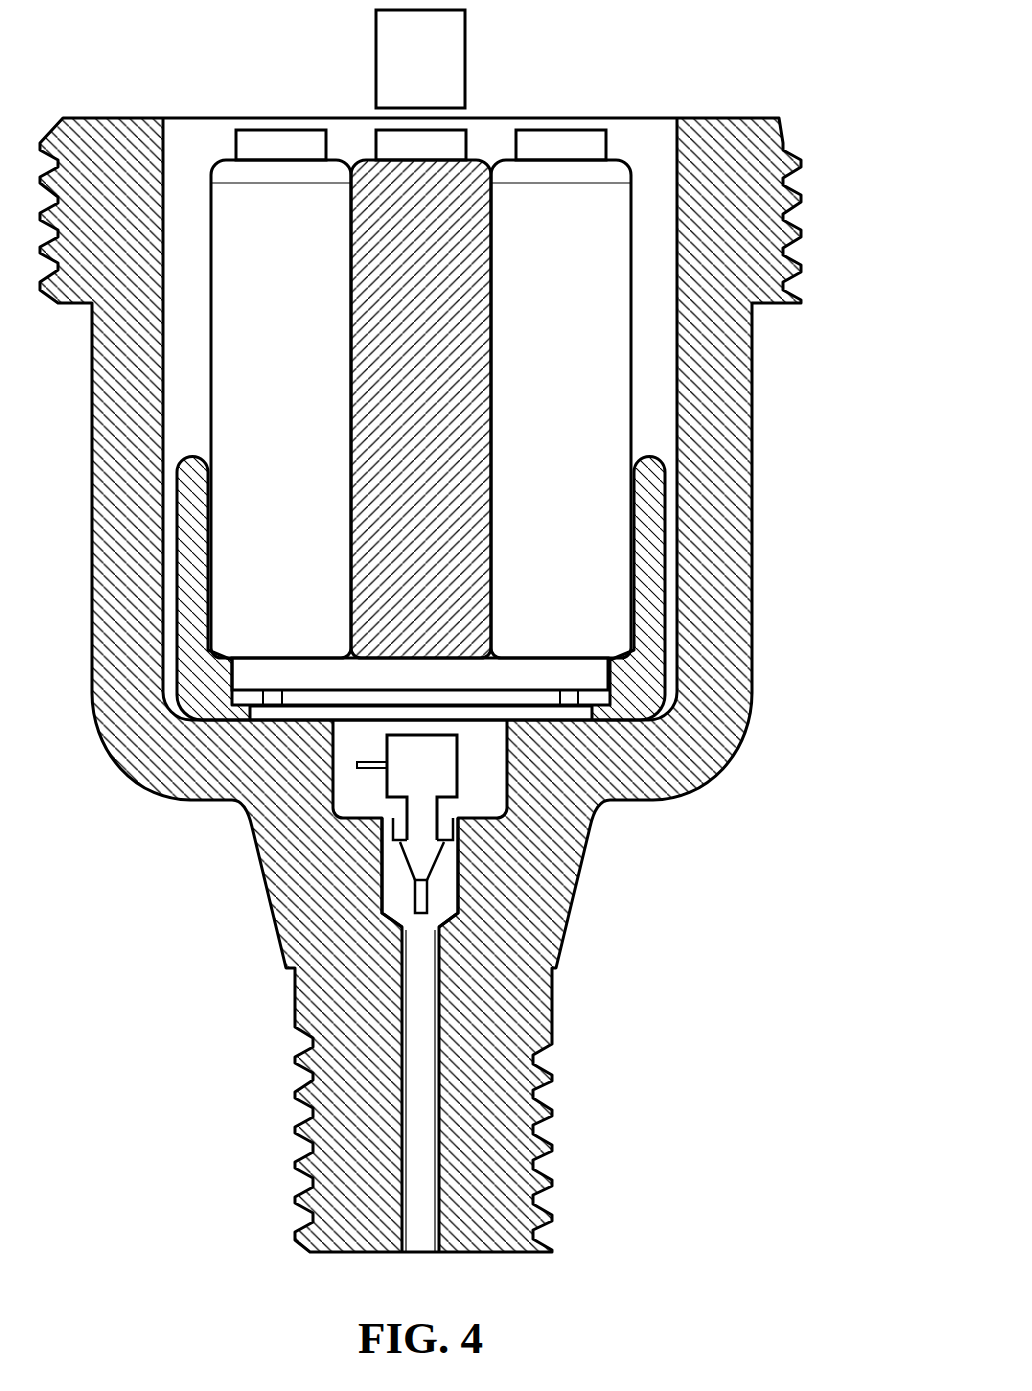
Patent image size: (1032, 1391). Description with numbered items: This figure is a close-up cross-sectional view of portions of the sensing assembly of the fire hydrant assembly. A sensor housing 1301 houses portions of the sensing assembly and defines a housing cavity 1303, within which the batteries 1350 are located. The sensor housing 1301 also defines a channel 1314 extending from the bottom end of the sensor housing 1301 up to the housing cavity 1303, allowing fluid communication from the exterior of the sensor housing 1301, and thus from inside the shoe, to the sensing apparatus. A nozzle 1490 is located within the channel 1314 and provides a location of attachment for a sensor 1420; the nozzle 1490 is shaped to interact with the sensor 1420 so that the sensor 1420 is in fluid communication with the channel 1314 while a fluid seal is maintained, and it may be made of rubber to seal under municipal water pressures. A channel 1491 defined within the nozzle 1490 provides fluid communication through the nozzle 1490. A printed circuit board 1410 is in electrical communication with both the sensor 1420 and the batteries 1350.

The sensor housing 1301 is at (755, 620).
The housing cavity 1303 is at (672, 523).
The channel 1314 is at (432, 998).
The batteries 1350 is at (608, 398).
The printed circuit board 1410 is at (543, 683).
The sensor 1420 is at (430, 777).
The nozzle 1490 is at (455, 888).
The channel 1491 is at (418, 895).